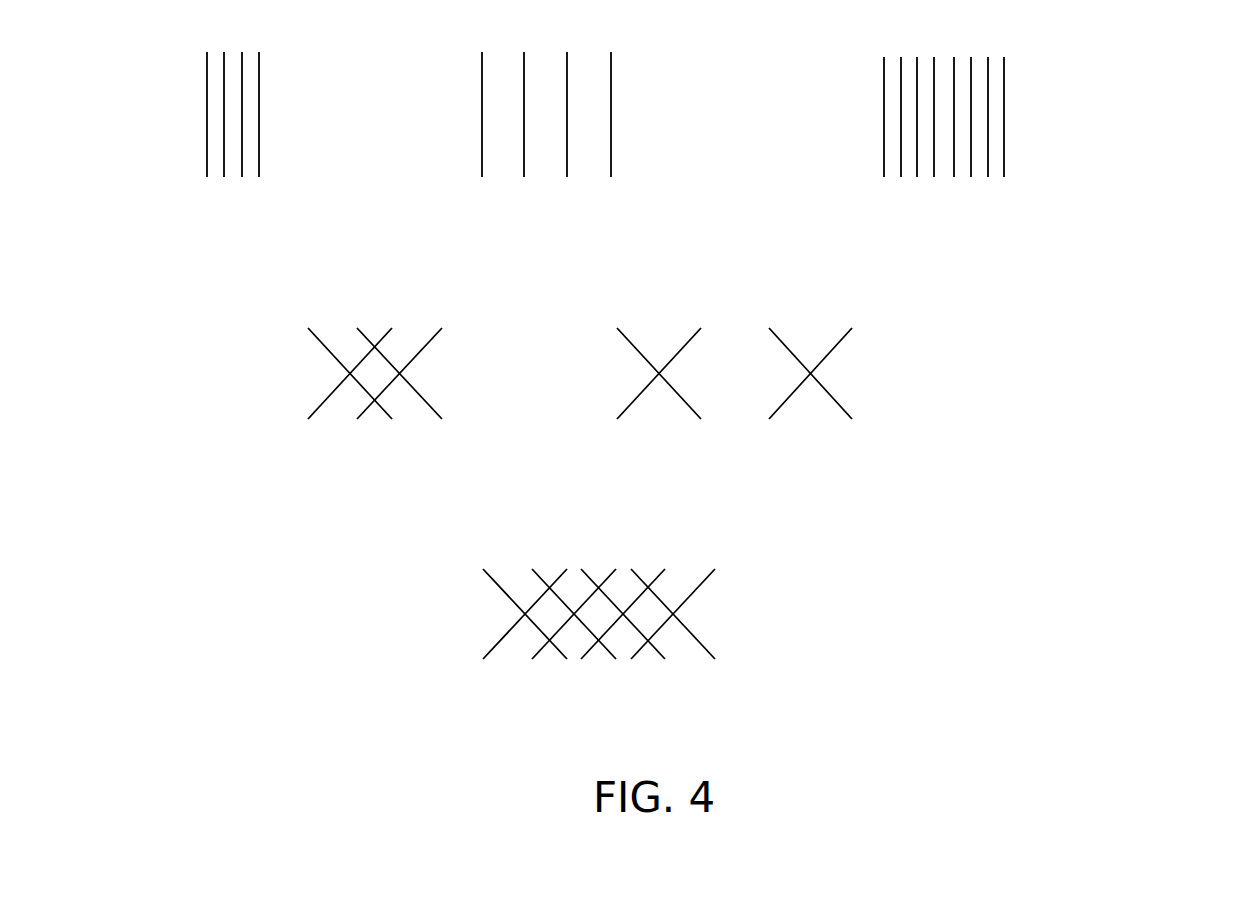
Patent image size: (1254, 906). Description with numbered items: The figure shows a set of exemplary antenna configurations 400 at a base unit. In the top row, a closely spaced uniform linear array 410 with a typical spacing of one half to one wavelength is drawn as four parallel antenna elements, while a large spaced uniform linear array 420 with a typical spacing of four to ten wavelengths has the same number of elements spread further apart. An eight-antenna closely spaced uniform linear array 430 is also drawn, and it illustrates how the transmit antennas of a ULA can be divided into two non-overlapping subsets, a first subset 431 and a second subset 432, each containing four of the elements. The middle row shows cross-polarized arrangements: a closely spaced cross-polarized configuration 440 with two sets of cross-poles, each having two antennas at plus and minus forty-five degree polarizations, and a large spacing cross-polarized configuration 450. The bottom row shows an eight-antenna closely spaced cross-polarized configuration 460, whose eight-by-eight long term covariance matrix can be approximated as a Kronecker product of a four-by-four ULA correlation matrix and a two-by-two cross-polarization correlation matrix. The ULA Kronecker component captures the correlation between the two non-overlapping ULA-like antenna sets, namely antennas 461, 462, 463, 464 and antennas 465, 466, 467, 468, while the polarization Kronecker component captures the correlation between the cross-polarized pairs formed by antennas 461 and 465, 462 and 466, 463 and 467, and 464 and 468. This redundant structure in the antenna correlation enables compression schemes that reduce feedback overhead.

The antenna array configurations 400 is at (1159, 88).
The closely spaced ULA 410 is at (218, 33).
The large spaced ULA 420 is at (527, 33).
The 8 antenna ULA closely spaced 430 is at (1041, 108).
The antenna subset 431 is at (933, 56).
The antenna subset 432 is at (1003, 56).
The cross-polarized configuration 440 is at (357, 308).
The 4 antenna XPOL large spacing 450 is at (723, 308).
The eight-antenna cross-polarized configuration 460 is at (406, 620).
The antenna 461 is at (492, 572).
The antenna 462 is at (541, 572).
The antenna 463 is at (590, 572).
The antenna 464 is at (640, 572).
The antenna 465 is at (492, 655).
The antenna 466 is at (541, 655).
The antenna 467 is at (590, 655).
The antenna 468 is at (640, 655).